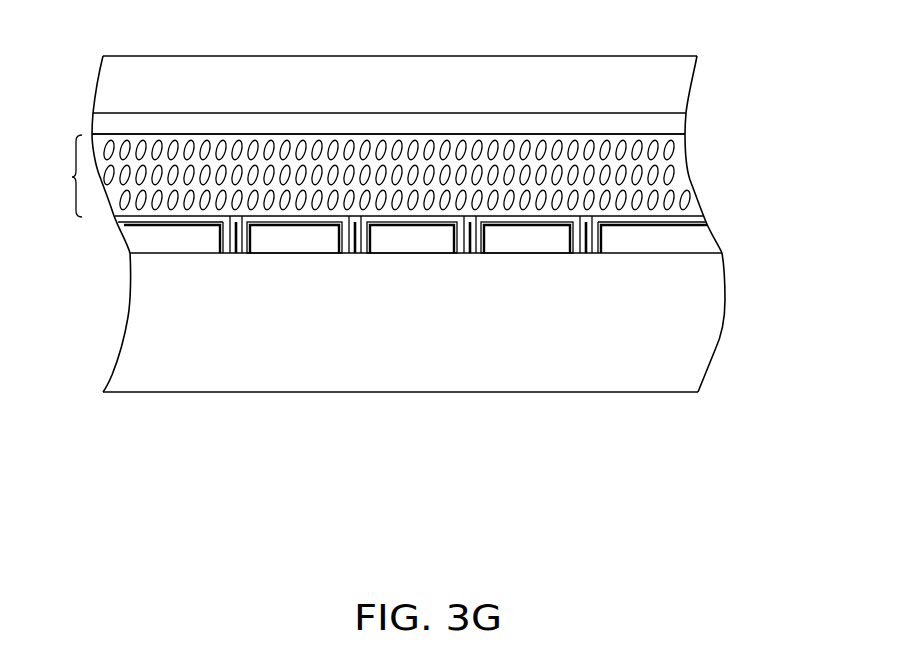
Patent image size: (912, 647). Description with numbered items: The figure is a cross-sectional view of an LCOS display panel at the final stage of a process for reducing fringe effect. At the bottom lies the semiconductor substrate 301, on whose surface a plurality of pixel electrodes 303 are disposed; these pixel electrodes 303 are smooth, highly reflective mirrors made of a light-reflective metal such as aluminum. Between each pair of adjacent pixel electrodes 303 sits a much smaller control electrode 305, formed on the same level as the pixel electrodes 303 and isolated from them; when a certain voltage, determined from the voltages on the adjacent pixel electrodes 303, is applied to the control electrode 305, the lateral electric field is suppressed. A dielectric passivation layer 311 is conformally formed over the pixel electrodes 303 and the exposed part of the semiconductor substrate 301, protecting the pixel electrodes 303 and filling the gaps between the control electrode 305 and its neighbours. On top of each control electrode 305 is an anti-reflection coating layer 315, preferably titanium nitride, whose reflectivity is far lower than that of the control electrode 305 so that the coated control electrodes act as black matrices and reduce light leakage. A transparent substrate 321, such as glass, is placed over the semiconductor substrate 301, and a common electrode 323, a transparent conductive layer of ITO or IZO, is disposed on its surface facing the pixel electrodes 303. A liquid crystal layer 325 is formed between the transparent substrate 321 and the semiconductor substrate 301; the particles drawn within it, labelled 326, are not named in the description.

The semiconductor substrate 301 is at (708, 312).
The pixel electrodes 303 is at (135, 243).
The control electrode 305 is at (237, 240).
The passivation layer 311 is at (166, 220).
The anti-reflection coating (ARC) layer 315 is at (236, 218).
The transparent substrate 321 is at (678, 87).
The common electrode 323 is at (677, 129).
The liquid crystal layer 325 is at (356, 175).
The phosphor particles 326 is at (672, 173).